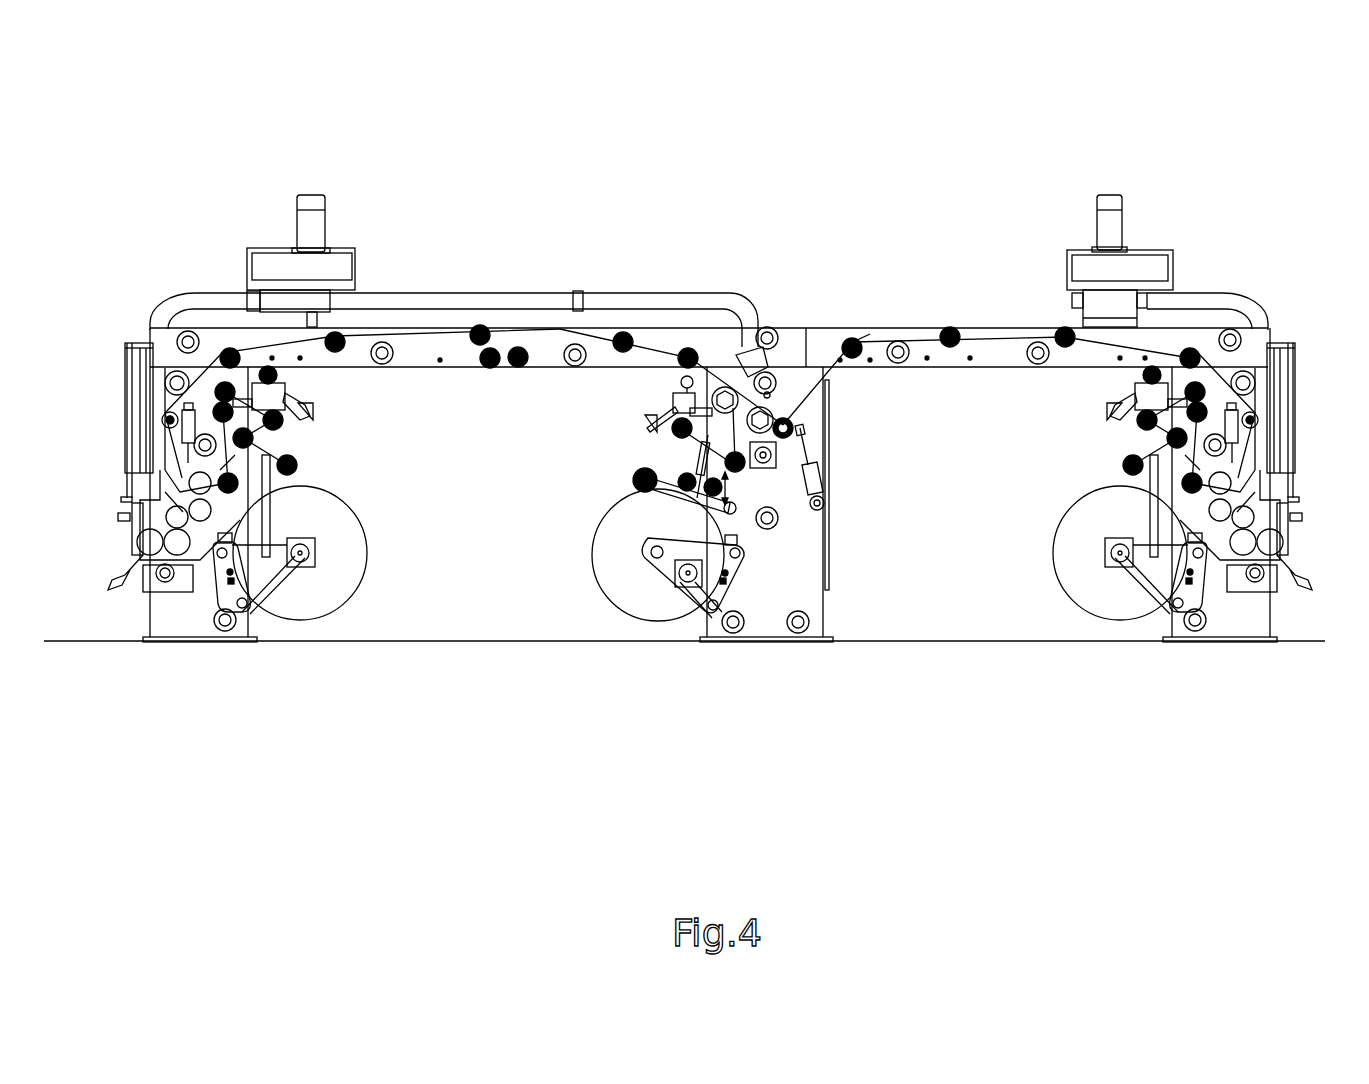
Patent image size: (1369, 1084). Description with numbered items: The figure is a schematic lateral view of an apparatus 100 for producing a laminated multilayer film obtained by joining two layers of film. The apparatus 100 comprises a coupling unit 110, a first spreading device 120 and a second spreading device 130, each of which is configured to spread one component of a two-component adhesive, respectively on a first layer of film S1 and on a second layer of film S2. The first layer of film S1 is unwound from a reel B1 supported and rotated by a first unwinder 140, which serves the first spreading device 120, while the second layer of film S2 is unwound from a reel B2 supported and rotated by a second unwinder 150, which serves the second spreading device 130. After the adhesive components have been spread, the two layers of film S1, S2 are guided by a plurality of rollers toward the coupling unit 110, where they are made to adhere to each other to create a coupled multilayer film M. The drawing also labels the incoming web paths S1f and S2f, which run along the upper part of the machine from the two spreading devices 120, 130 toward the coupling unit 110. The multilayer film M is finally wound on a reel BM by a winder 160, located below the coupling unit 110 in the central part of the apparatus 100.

The apparatus 100 is at (900, 150).
The coupling unit 110 is at (792, 501).
The first spreading device 120 is at (135, 484).
The second spreading device 130 is at (1218, 579).
The first unwinder 140 is at (274, 635).
The second unwinder 150 is at (1155, 625).
The winder 160 is at (688, 638).
The reel B1 is at (350, 540).
The reel B2 is at (1073, 549).
The reel BM is at (603, 552).
The multilayer film M is at (674, 474).
The first layer of film S1 is at (413, 330).
The first web feed S1f is at (650, 326).
The second layer of film S2 is at (1008, 330).
The second web feed S2f is at (868, 326).